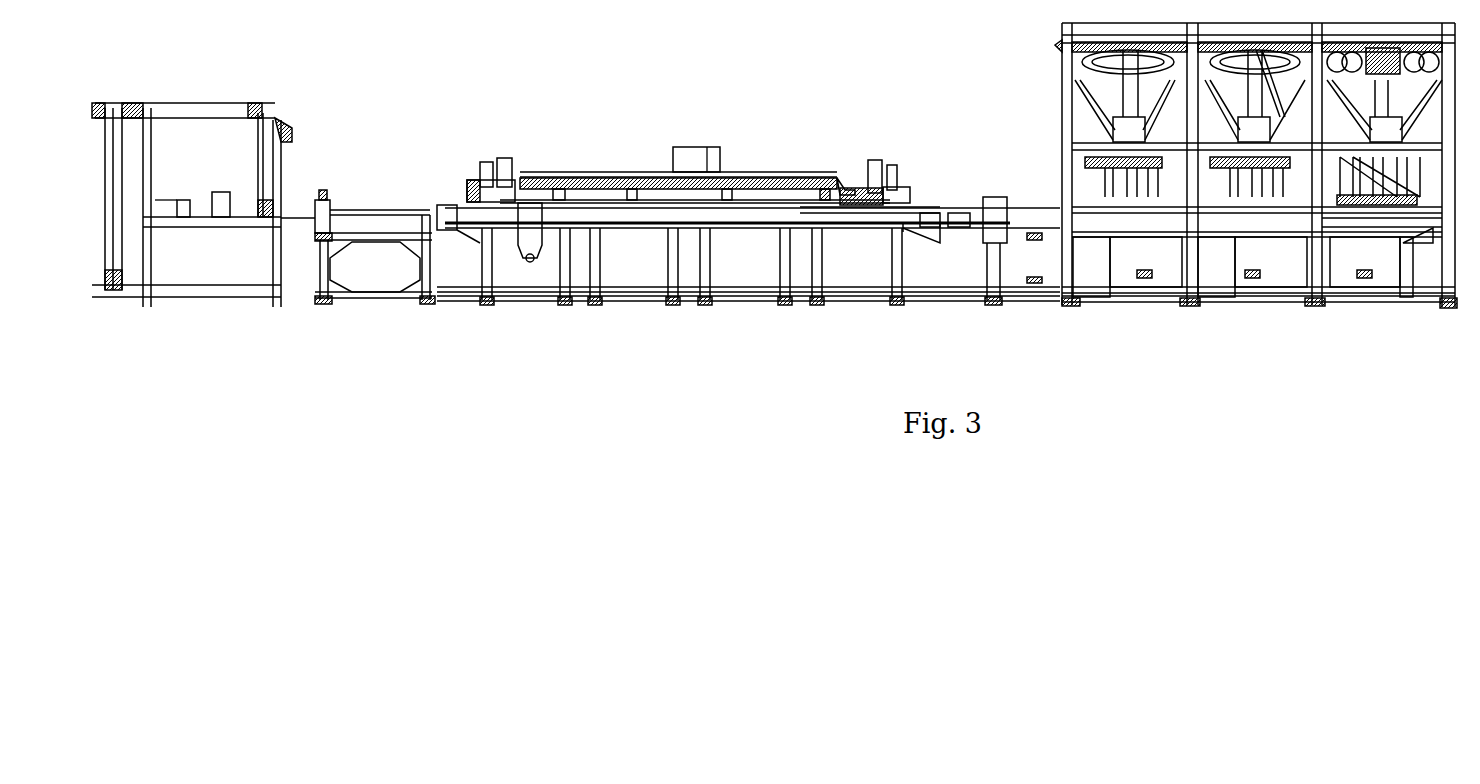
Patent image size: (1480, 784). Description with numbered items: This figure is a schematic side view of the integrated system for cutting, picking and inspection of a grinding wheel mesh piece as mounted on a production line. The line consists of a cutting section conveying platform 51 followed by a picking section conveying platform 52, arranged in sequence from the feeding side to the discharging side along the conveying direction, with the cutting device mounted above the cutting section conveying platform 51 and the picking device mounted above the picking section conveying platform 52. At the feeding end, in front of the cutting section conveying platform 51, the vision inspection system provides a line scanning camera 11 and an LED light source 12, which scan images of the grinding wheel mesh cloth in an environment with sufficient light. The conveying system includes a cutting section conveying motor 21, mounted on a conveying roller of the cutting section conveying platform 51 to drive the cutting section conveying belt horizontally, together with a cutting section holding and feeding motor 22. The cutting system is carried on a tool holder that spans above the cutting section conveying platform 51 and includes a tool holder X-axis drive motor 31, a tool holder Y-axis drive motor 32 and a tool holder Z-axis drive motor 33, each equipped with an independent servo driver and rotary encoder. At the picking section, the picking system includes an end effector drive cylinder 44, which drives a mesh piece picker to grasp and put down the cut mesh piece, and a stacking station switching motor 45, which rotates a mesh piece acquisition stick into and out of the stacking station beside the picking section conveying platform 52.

The line scanning camera 11 is at (187, 205).
The LED light source 12 is at (220, 193).
The cutting section conveying motor 21 is at (938, 203).
The cutting section holding and feeding motor 22 is at (558, 172).
The tool holder X-axis drive motor 31 is at (712, 147).
The tool holder Y-axis drive motor 32 is at (490, 164).
The tool holder Z-axis drive motor 33 is at (507, 160).
The end effector drive cylinder 44 is at (1100, 160).
The stacking station switching motor 45 is at (1105, 178).
The cutting section conveying platform 51 is at (945, 323).
The picking section conveying platform 52 is at (1455, 323).